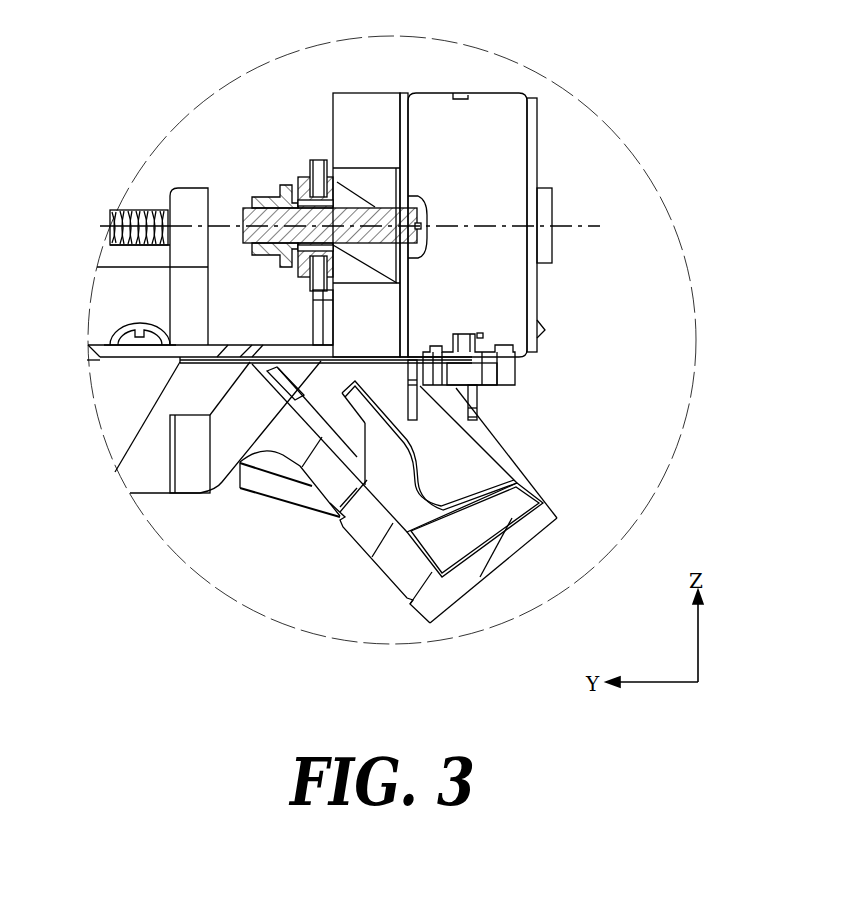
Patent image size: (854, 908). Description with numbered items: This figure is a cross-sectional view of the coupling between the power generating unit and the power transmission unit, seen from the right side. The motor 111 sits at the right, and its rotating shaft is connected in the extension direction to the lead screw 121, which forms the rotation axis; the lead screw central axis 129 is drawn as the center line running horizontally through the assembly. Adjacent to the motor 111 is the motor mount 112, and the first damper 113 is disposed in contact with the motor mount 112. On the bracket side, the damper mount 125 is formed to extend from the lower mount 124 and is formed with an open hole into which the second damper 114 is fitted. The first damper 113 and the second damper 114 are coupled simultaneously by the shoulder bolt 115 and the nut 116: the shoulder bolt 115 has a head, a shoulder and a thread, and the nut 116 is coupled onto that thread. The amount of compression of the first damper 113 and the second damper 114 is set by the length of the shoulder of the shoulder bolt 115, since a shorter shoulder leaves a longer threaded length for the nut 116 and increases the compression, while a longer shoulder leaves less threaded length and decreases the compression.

The motor 111 is at (527, 292).
The motor mount 112 is at (403, 97).
The first damper 113 is at (362, 97).
The second damper 114 is at (303, 177).
The shoulder bolt 115 is at (224, 177).
The nut 116 is at (265, 196).
The lead screw 121 is at (121, 211).
The lower mount 124 is at (242, 222).
The damper mount 125 is at (320, 162).
The lead screw central axis 129 is at (583, 226).